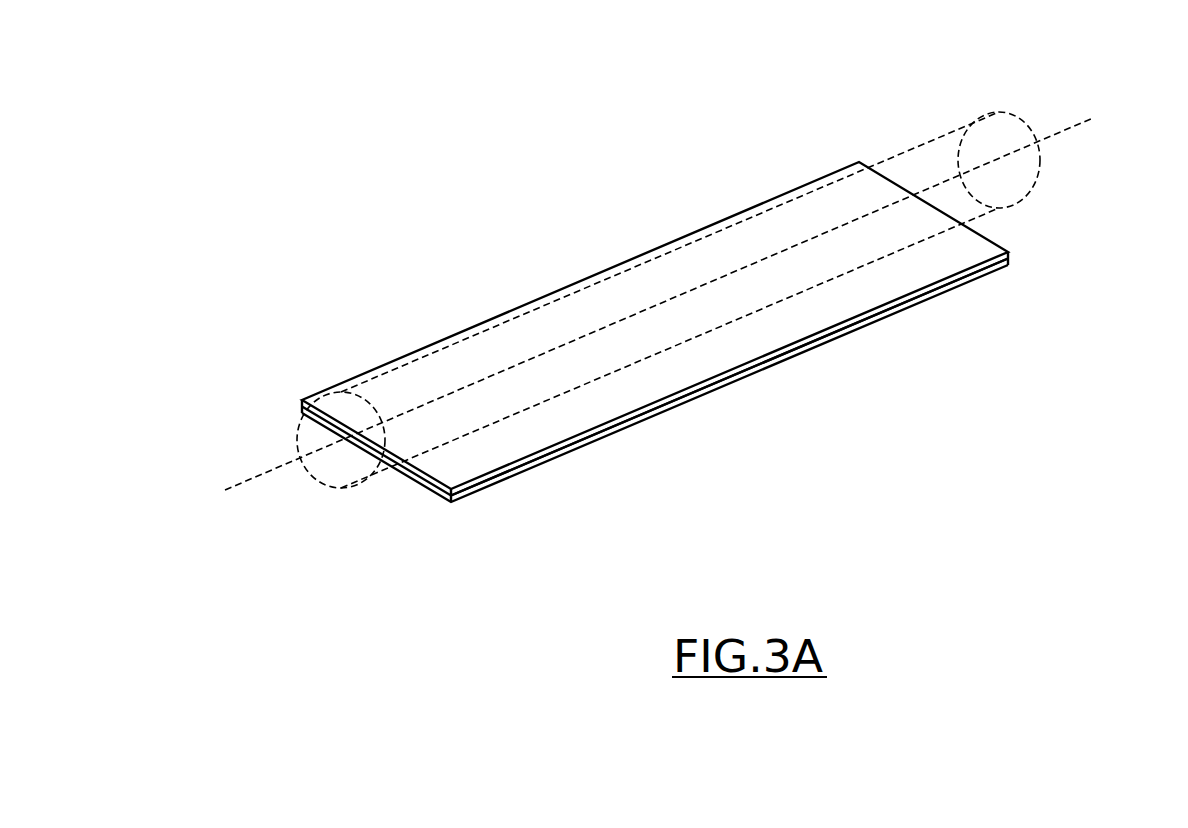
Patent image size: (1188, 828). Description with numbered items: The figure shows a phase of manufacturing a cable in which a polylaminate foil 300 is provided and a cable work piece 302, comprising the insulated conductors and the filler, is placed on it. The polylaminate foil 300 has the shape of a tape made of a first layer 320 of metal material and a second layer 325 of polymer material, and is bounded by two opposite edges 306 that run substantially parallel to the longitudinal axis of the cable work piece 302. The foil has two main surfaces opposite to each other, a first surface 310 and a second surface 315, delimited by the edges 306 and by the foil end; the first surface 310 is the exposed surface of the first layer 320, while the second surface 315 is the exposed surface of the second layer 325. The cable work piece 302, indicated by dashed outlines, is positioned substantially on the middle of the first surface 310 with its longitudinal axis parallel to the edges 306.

The polylaminate foil 300 is at (694, 315).
The cable work piece 302 is at (913, 147).
The edges 306 is at (603, 252).
The first surface 310 is at (914, 279).
The second surface 315 is at (835, 348).
The first layer 320 is at (570, 444).
The second layer 325 is at (485, 488).